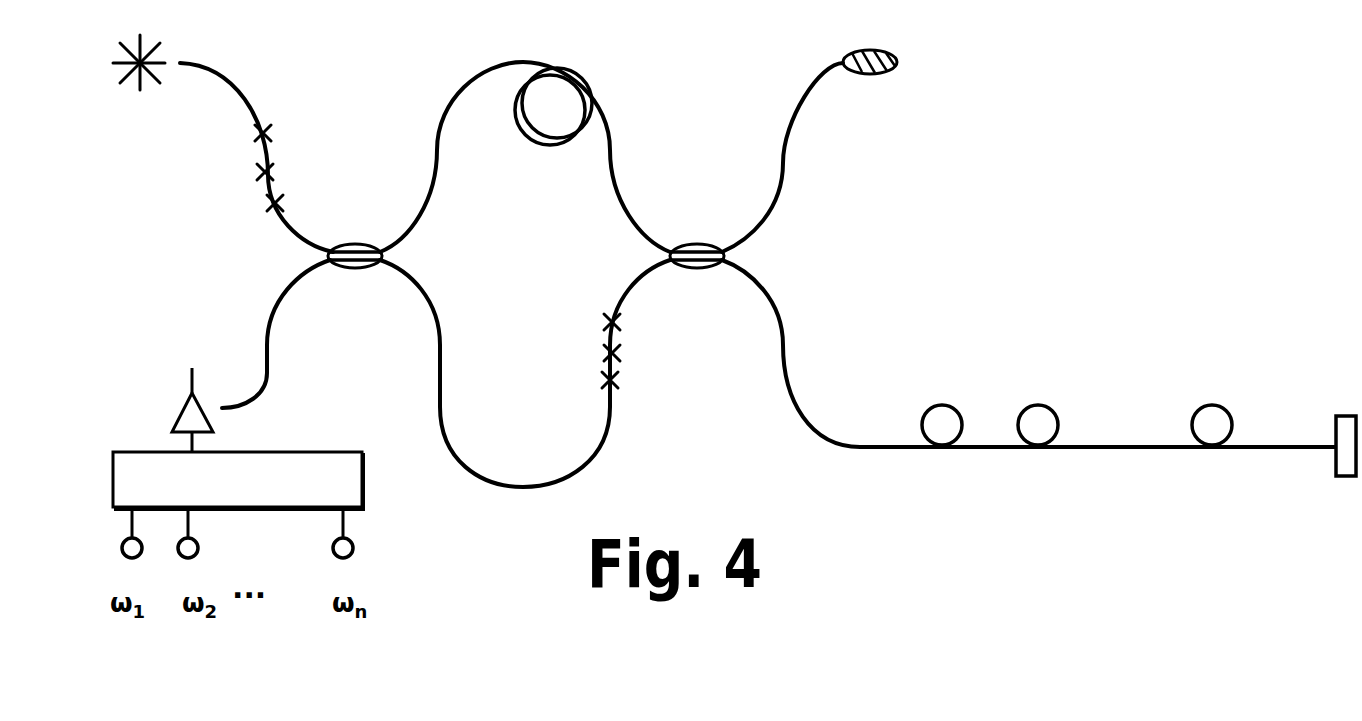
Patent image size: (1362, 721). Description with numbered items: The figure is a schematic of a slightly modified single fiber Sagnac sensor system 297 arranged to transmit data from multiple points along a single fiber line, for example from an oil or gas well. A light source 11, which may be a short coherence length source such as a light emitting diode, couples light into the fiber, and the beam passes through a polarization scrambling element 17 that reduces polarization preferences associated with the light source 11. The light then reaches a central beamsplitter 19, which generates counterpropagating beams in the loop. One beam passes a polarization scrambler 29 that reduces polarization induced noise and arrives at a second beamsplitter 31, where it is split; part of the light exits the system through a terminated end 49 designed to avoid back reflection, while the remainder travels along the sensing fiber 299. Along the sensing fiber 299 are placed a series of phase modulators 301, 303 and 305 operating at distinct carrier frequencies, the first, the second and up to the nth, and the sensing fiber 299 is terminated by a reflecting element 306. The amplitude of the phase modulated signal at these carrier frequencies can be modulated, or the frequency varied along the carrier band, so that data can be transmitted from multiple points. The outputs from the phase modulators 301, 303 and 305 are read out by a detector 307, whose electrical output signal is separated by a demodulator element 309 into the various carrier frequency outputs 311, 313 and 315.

The light source 11 is at (143, 77).
The polarization scrambling element 17 is at (273, 170).
The central beamsplitter 19 is at (347, 243).
The polarization scrambler 29 is at (620, 350).
The second beamsplitter 31 is at (690, 240).
The terminated end 49 is at (863, 77).
The single fiber Sagnac sensor system 297 is at (262, 230).
The sensing fiber 299 is at (1092, 448).
The phase modulator 301 is at (937, 403).
The phase modulator 303 is at (1037, 403).
The phase modulator 305 is at (1210, 403).
The reflecting element 306 is at (1327, 458).
The detector 307 is at (178, 412).
The demodulator element 309 is at (277, 450).
The carrier frequency output 311 is at (138, 557).
The carrier frequency output 313 is at (199, 548).
The carrier frequency output 315 is at (355, 546).